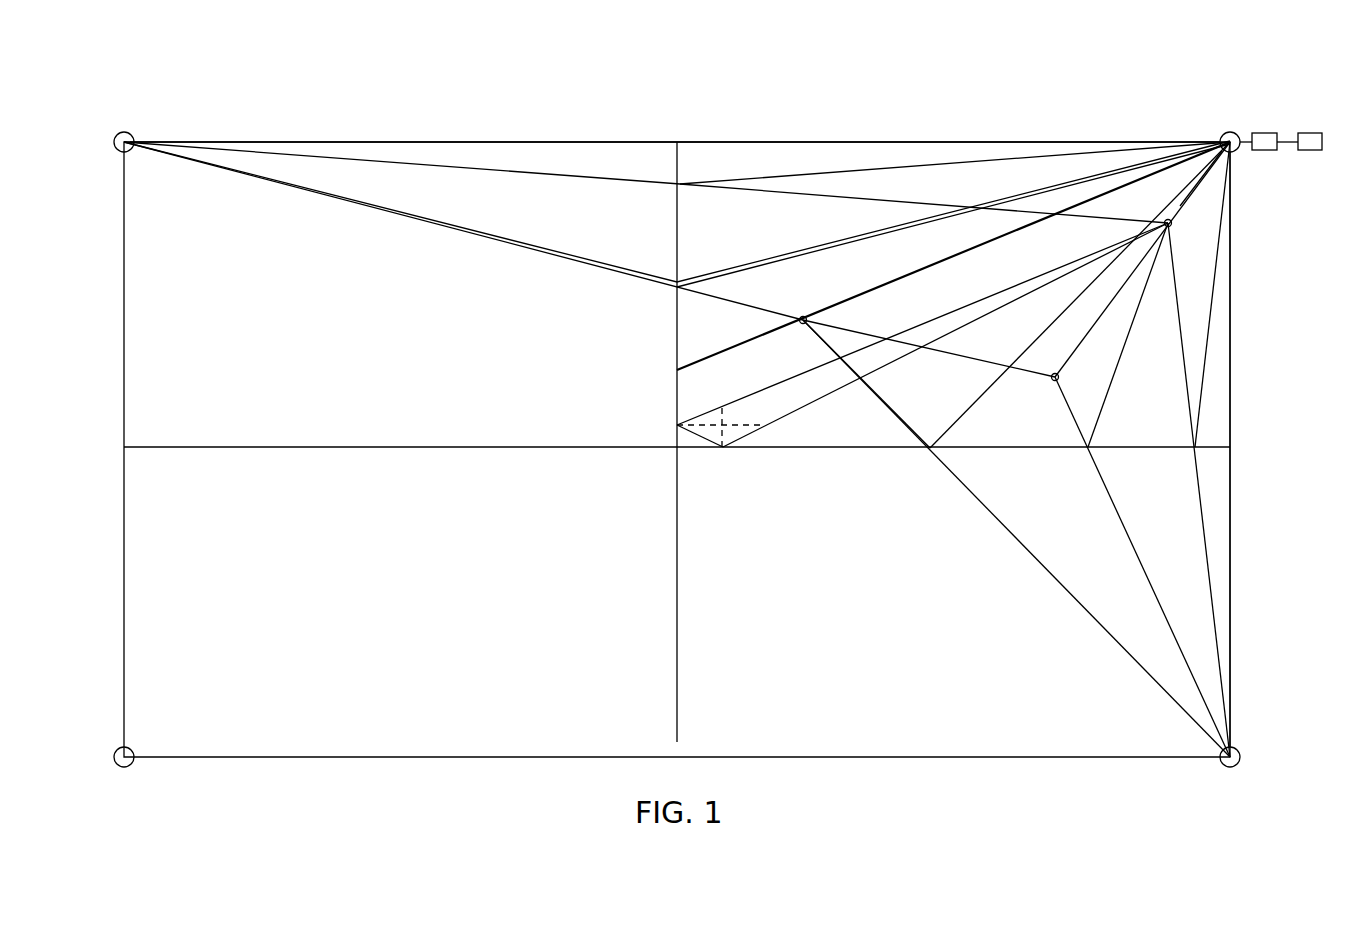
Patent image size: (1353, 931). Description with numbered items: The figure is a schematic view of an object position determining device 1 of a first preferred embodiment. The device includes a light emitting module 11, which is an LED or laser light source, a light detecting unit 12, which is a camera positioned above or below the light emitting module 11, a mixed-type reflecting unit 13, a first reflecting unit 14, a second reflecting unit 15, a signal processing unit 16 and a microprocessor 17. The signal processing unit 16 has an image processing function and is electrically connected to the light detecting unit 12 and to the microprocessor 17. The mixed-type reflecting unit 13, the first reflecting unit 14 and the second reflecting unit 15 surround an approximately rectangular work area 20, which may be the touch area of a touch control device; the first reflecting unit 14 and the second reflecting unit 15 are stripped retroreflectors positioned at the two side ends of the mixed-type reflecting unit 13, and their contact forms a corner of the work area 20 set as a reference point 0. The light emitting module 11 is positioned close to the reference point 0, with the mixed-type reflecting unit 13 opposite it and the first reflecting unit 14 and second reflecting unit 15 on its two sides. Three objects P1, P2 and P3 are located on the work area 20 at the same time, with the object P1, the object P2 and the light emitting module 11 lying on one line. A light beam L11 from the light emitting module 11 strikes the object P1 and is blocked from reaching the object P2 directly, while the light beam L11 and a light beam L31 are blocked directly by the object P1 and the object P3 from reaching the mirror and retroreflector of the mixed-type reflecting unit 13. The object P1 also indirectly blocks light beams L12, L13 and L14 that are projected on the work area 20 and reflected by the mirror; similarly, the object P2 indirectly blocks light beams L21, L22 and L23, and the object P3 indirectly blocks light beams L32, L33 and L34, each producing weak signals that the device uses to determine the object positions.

The object position determining device 1 is at (858, 85).
The reference point 0 is at (1231, 128).
The light emitting module 11 is at (1236, 158).
The light detecting unit 12 is at (1240, 150).
The mixed-type reflecting unit 13 is at (676, 236).
The first reflecting unit 14 is at (978, 141).
The second reflecting unit 15 is at (1232, 286).
The signal processing unit 16 is at (1262, 133).
The microprocessor 17 is at (1311, 133).
The work area 20 is at (1160, 378).
The object P1 is at (1168, 219).
The object P2 is at (1055, 381).
The object P3 is at (803, 316).
The light beam L11 is at (1187, 200).
The light beam L12 is at (788, 175).
The light beam L13 is at (1212, 308).
The light beam L14 is at (684, 433).
The light beam L21 is at (723, 268).
The light beam L22 is at (1105, 410).
The light beam L23 is at (720, 350).
The light beam L31 is at (860, 381).
The light beam L32 is at (783, 261).
The light beam L33 is at (985, 400).
The light beam L34 is at (927, 330).